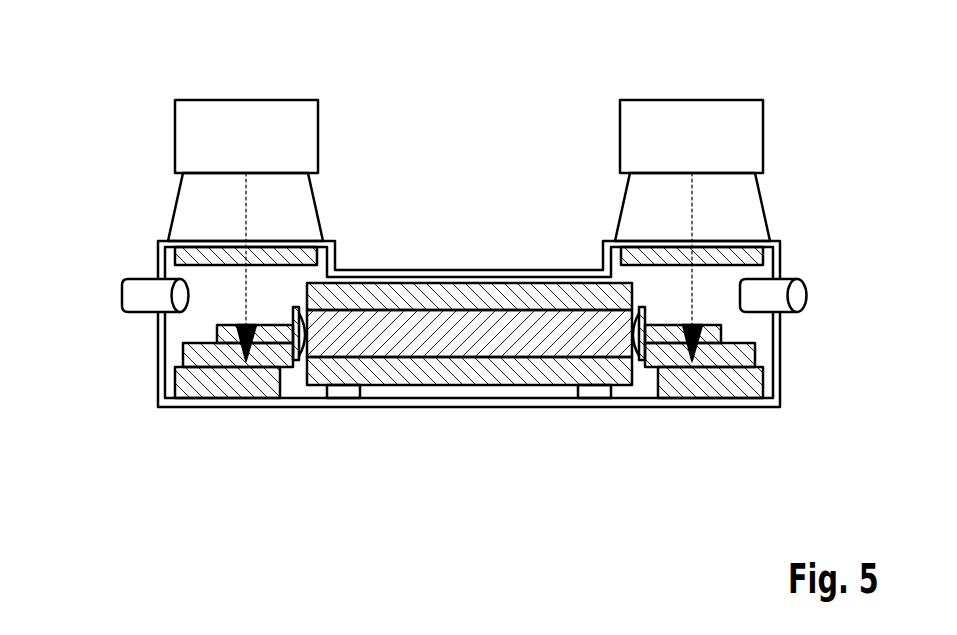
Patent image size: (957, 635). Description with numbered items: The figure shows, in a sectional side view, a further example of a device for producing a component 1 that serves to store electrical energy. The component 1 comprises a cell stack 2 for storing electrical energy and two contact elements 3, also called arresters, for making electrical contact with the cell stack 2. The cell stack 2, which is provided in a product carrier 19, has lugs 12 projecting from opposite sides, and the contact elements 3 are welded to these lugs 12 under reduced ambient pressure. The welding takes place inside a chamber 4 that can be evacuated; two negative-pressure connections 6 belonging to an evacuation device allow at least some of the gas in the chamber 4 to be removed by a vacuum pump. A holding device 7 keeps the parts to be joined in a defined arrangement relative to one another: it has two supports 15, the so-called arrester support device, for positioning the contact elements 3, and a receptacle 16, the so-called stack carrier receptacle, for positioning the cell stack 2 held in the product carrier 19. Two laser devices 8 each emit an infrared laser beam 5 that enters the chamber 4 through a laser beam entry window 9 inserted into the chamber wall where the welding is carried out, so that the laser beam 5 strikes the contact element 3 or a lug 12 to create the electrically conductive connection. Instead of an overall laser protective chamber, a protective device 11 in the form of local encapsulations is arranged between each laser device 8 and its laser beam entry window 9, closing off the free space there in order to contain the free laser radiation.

The component 1 is at (469, 391).
The cell stack 2 is at (517, 347).
The contact element 3 is at (196, 352).
The chamber 4 is at (470, 269).
The laser beam 5 is at (246, 191).
The negative-pressure connection 6 is at (121, 295).
The holding device 7 is at (358, 493).
The laser device 8 is at (244, 100).
The laser beam entry window 9 is at (198, 256).
The protective device 11 is at (308, 200).
The lug 12 is at (222, 330).
The support 15 is at (243, 407).
The receptacle 16 is at (347, 407).
The product carrier 19 is at (432, 378).